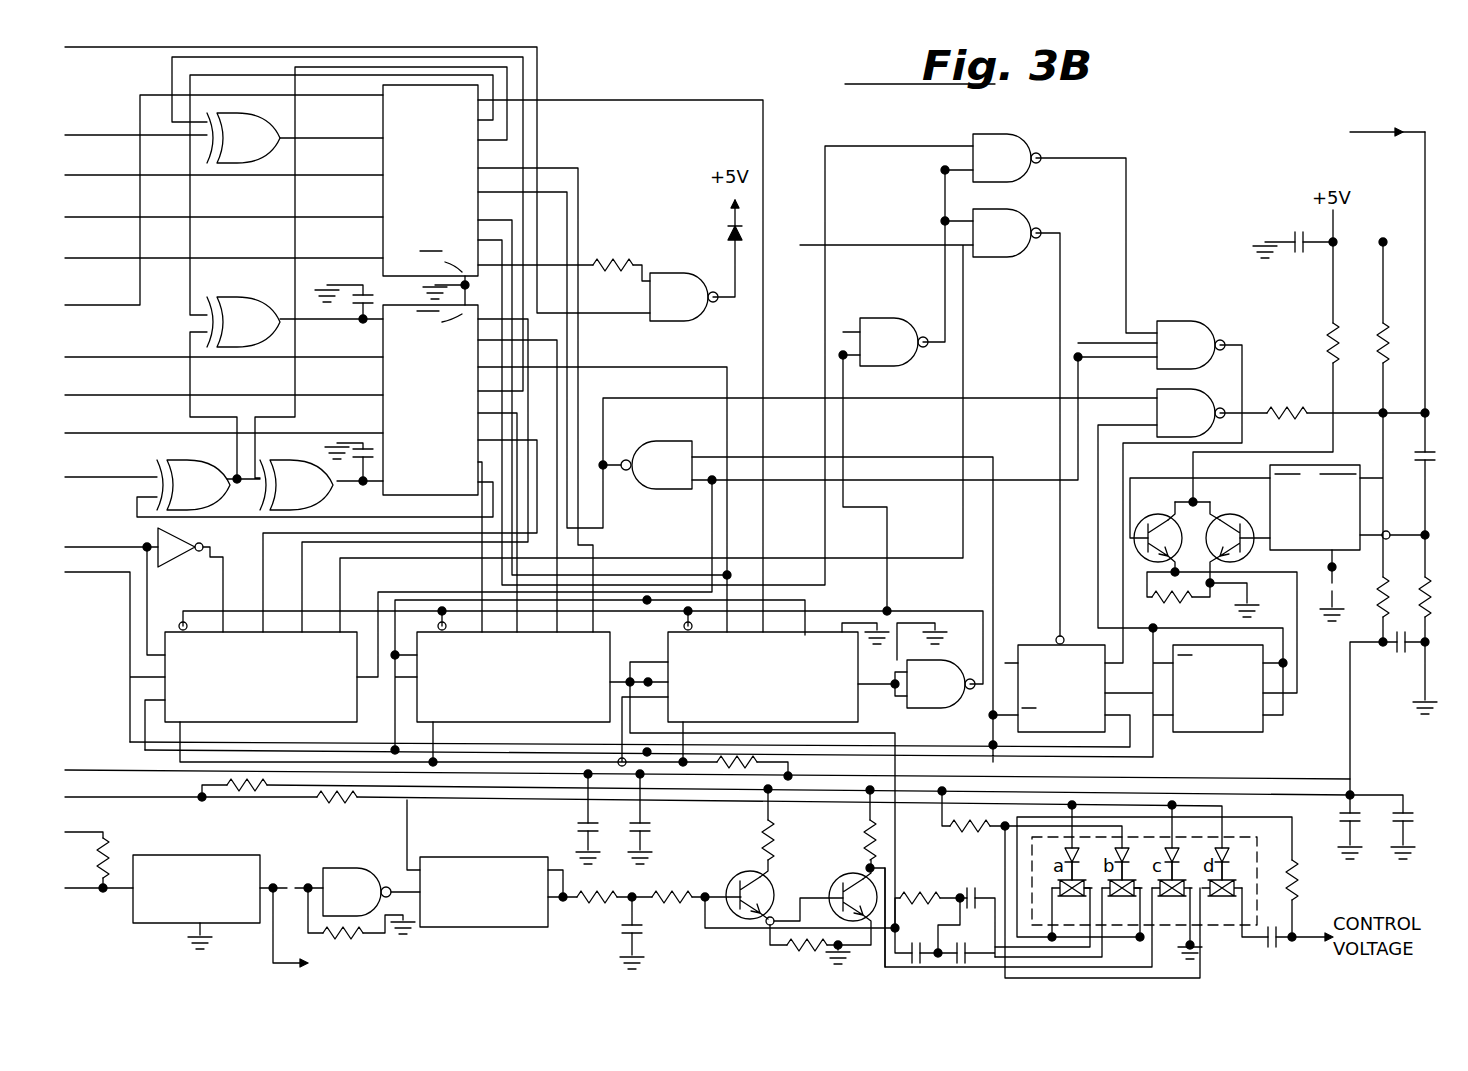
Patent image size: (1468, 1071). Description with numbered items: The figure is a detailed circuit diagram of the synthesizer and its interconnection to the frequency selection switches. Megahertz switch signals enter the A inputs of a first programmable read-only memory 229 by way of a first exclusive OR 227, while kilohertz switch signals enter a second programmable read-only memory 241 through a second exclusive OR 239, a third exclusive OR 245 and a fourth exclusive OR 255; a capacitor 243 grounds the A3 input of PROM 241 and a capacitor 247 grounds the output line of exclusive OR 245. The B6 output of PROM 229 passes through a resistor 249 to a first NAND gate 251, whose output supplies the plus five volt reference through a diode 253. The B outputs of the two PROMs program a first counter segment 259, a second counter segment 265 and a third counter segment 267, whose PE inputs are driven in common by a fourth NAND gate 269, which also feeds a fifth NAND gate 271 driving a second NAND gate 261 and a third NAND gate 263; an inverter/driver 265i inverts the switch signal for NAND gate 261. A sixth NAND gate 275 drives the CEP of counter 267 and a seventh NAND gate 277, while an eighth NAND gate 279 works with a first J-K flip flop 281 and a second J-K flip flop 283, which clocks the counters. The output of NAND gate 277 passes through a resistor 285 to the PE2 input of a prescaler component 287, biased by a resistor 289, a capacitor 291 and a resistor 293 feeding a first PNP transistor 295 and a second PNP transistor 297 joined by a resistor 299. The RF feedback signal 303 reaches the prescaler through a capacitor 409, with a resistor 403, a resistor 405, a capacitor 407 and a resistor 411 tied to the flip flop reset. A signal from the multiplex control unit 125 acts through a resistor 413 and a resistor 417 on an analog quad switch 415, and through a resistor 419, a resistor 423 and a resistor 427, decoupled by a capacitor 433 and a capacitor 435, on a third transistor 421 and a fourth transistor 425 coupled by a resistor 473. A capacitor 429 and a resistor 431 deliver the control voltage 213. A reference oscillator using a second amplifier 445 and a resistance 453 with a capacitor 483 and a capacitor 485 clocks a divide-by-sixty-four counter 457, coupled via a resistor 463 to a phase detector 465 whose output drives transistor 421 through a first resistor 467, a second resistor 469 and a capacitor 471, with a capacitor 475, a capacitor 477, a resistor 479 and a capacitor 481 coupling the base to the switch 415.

The first exclusive OR 227 is at (243, 138).
The second exclusive OR 239 is at (243, 322).
The fourth exclusive OR 255 is at (193, 485).
The third exclusive OR 245 is at (296, 485).
The first programmable read-only memory 229 is at (430, 180).
The second programmable read-only memory 241 is at (430, 400).
The capacitor 243 is at (353, 324).
The capacitor 247 is at (350, 429).
The resistor 249 is at (615, 233).
The first NAND gate 251 is at (684, 297).
The diode 253 is at (706, 232).
The inverter/driver 265i is at (167, 572).
The third NAND gate 263 is at (1007, 158).
The second NAND gate 261 is at (1007, 233).
The fifth NAND gate 271 is at (894, 342).
The eighth NAND gate 279 is at (1191, 345).
The seventh NAND gate 277 is at (1191, 413).
The sixth NAND gate 275 is at (647, 465).
The fourth NAND gate 269 is at (941, 684).
The third counter segment 267 is at (261, 677).
The second counter segment 265 is at (513, 677).
The first counter segment 259 is at (763, 677).
The first J-K flip flop 281 is at (1061, 688).
The second J-K flip flop 283 is at (1218, 688).
The prescaler component 287 is at (1315, 507).
The resistor 285 is at (1284, 390).
The resistor 289 is at (1366, 318).
The resistor 293 is at (1311, 327).
The capacitor 291 is at (1264, 222).
The first PNP transistor 295 is at (1156, 517).
The second PNP transistor 297 is at (1231, 517).
The resistor 299 is at (1189, 611).
The resistor 403 is at (1369, 584).
The resistor 405 is at (1407, 555).
The capacitor 407 is at (1385, 671).
The capacitor 409 is at (1411, 418).
The RF feedback signal 303 is at (1270, 130).
The control voltage 213 is at (1369, 974).
The resistor 411 is at (722, 800).
The resistor 413 is at (337, 817).
The resistor 417 is at (252, 812).
The resistor 419 is at (793, 833).
The third transistor 421 is at (777, 879).
The resistor 423 is at (891, 833).
The fourth transistor 425 is at (852, 873).
The resistor 427 is at (955, 840).
The capacitor 429 is at (1255, 953).
The resistor 431 is at (1315, 880).
The capacitor 433 is at (1326, 821).
The capacitor 435 is at (1405, 787).
The analog quad switch 415 is at (1164, 829).
The resistance 453 is at (132, 847).
The divide-by-64 counter 457 is at (196, 889).
The second amplifier 445 is at (357, 892).
The phase detector 465 is at (484, 892).
The resistor 463 is at (320, 941).
The multiplex control unit 125 is at (488, 966).
The first resistor 467 is at (592, 914).
The second resistor 469 is at (673, 912).
The capacitor 471 is at (658, 946).
The resistor 473 is at (774, 949).
The capacitor 475 is at (914, 930).
The capacitor 477 is at (976, 936).
The resistor 479 is at (923, 881).
The capacitor 481 is at (977, 878).
The capacitor 483 is at (558, 823).
The capacitor 485 is at (664, 843).